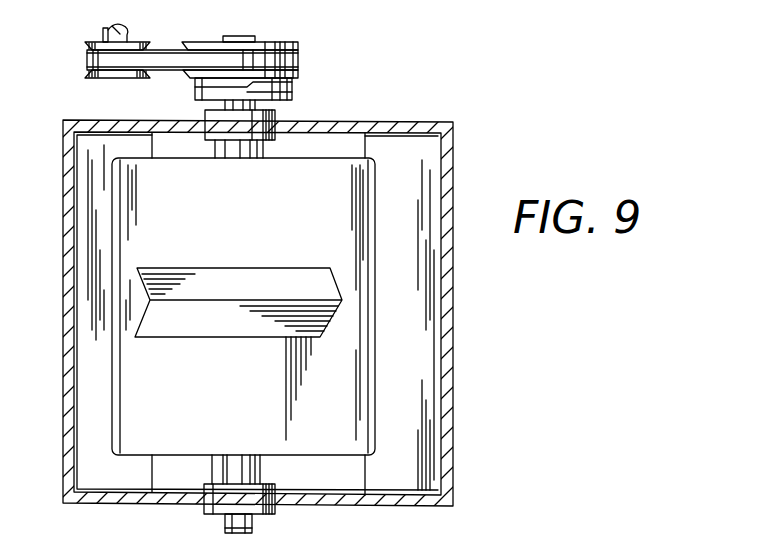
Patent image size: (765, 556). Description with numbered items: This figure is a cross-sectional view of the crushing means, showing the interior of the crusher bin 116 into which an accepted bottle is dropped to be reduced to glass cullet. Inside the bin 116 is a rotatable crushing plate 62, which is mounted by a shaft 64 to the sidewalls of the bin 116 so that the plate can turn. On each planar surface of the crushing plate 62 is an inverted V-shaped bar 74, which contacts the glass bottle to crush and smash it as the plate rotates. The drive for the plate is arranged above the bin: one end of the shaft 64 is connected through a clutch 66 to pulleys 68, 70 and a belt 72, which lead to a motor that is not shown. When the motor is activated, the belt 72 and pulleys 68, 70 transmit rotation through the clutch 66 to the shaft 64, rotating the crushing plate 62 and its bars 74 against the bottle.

The crusher bin 116 is at (453, 308).
The crushing plate 62 is at (347, 240).
The inverted V-shaped bar 74 is at (212, 285).
The shaft 64 is at (265, 109).
The clutch 66 is at (289, 92).
The pulley 70 is at (283, 44).
The belt 72 is at (162, 51).
The pulley 68 is at (105, 78).